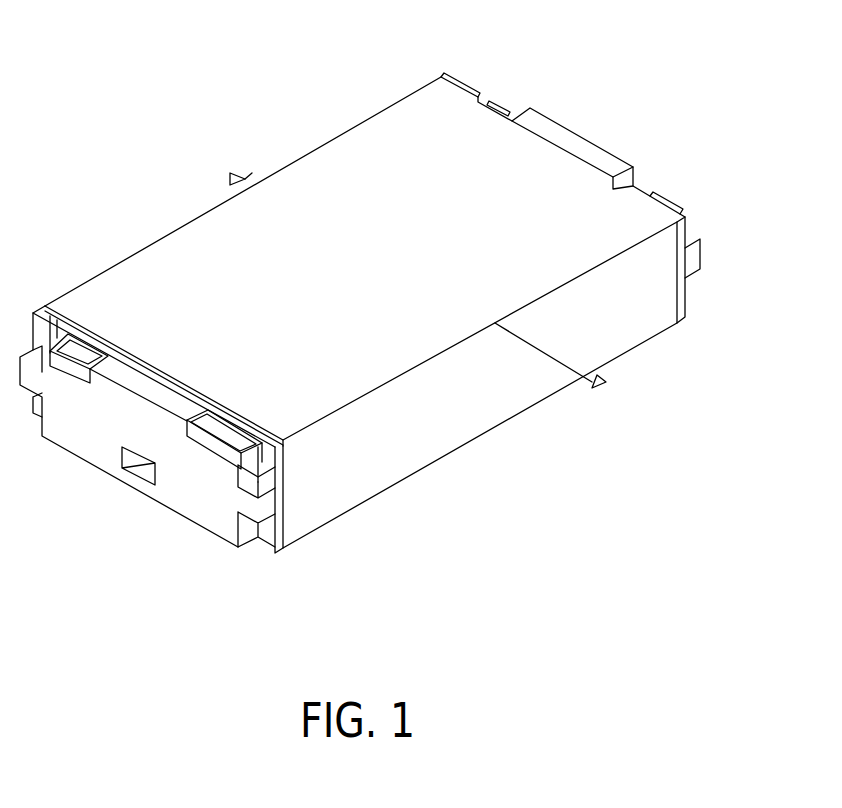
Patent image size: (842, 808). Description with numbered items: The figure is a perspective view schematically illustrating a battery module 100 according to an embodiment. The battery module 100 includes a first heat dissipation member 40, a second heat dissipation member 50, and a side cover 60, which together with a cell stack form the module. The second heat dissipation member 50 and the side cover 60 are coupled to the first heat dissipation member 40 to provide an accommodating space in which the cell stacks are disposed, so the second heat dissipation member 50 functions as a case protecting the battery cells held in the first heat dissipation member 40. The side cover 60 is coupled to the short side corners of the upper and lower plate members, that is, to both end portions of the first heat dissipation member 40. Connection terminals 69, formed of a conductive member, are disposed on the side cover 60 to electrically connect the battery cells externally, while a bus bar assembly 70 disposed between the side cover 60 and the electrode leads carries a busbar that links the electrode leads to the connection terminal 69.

The battery module 100 is at (195, 34).
The first heat dissipation member 40 is at (172, 252).
The second heat dissipation member 50 is at (330, 492).
The side cover 60 is at (206, 500).
The connection terminal 69 is at (197, 445).
The bus bar assembly 70 is at (352, 634).